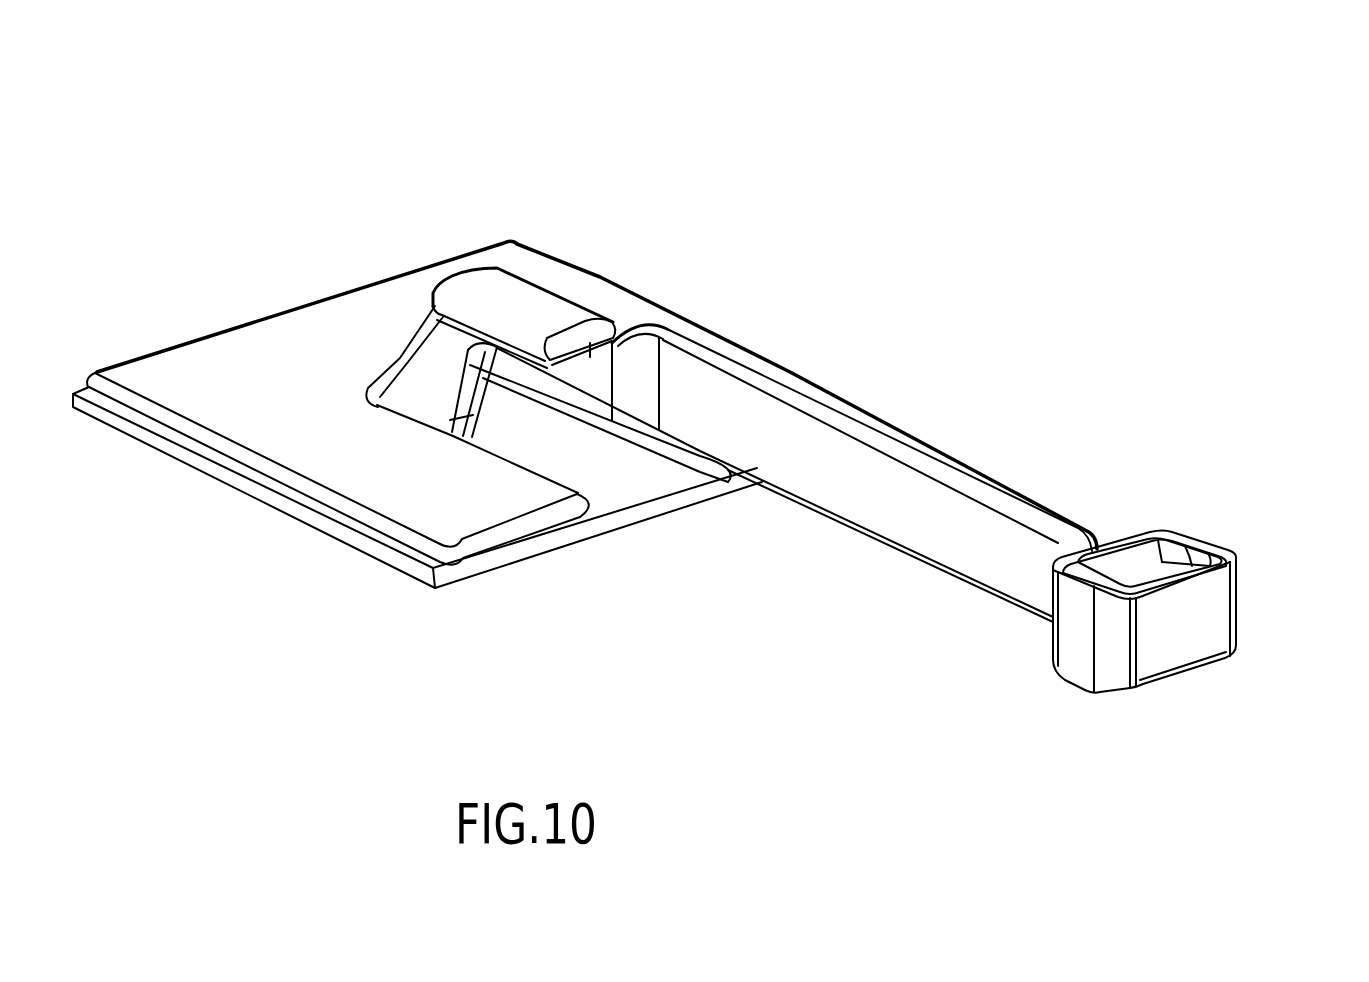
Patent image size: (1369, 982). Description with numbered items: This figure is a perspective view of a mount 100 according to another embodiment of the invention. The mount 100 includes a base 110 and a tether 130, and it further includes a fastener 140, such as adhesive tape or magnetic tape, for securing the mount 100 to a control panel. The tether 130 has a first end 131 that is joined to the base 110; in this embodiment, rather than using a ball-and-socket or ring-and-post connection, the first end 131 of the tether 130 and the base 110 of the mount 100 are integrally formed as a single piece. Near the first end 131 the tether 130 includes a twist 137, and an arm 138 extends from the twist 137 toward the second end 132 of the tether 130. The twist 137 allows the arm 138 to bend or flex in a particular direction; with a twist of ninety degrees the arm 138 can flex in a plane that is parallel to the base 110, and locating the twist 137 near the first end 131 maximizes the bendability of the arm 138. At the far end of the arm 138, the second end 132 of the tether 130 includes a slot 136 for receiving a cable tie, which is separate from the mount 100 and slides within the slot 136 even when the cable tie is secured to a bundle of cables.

The mount 100 is at (322, 224).
The base 110 is at (200, 352).
The tether 130 is at (958, 463).
The first end 131 is at (535, 256).
The second end 132 is at (1055, 710).
The slot 136 is at (1173, 560).
The twist 137 is at (640, 323).
The arm 138 is at (782, 383).
The fastener 140 is at (153, 447).